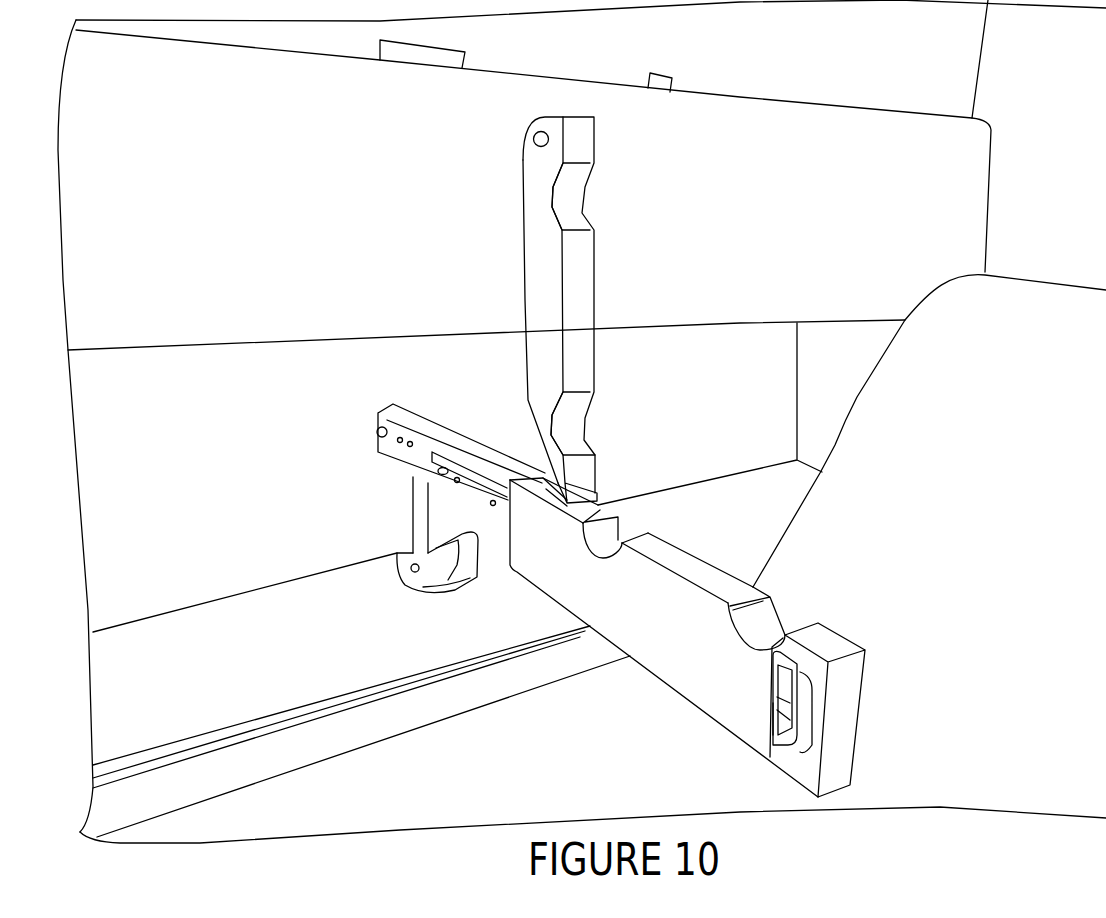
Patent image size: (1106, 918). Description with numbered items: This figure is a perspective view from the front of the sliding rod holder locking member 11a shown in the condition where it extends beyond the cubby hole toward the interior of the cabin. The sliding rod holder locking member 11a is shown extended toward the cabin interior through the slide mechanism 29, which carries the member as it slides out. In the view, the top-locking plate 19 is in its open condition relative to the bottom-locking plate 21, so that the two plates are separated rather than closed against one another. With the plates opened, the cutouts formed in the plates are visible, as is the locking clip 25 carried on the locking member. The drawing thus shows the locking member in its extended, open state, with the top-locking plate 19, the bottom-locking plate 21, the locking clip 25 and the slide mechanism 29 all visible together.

The sliding rod holder locking member 11a is at (628, 357).
The top-locking plate 19 is at (543, 268).
The bottom-locking plate 21 is at (687, 637).
The locking clip 25 is at (773, 690).
The slide mechanism 29 is at (457, 493).